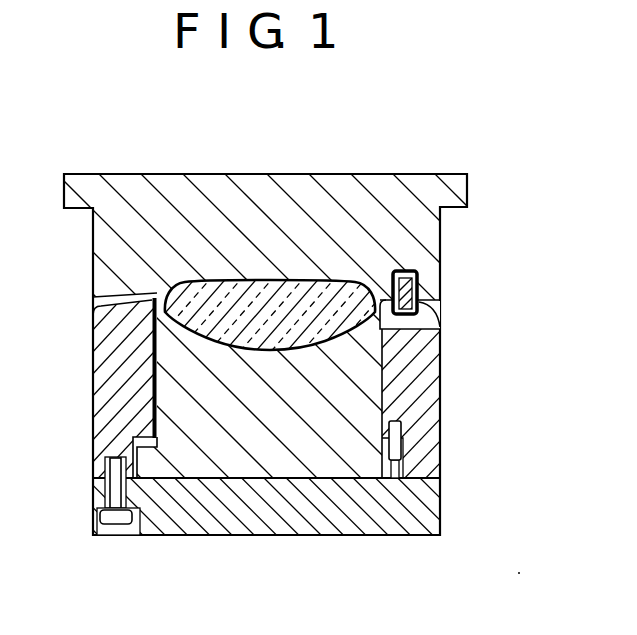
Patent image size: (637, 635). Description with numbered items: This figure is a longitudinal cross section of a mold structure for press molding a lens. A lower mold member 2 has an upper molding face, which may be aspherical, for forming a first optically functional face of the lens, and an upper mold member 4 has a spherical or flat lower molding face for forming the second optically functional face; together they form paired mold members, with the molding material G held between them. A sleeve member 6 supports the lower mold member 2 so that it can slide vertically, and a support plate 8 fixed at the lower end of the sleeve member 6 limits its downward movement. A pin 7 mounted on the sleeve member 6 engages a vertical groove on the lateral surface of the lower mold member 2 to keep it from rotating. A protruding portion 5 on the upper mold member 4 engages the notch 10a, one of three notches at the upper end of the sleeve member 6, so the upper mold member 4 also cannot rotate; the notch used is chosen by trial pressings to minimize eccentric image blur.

The lower mold member 2 is at (367, 377).
The upper mold member 4 is at (411, 225).
The protruding portion 5 is at (420, 288).
The sleeve member 6 is at (416, 447).
The pin 7 is at (400, 431).
The support plate 8 is at (413, 509).
The notch 10a is at (418, 326).
The molding material G is at (170, 288).